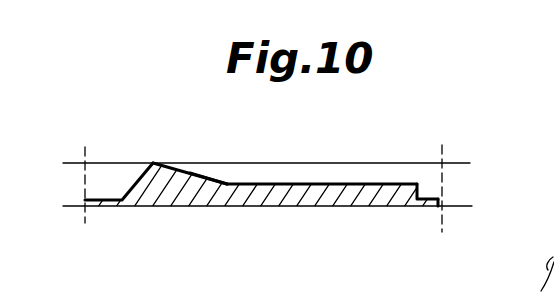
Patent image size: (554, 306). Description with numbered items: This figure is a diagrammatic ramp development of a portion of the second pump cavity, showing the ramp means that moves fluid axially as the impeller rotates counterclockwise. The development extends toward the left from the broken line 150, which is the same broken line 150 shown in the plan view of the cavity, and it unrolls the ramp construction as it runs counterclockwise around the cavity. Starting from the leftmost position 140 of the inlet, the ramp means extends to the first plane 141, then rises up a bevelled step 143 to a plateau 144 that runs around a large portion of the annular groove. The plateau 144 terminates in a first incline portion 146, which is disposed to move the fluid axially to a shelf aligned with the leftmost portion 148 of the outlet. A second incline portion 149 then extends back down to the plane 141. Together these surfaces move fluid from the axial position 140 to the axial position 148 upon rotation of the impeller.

The leftmost position of the inlet 140 is at (243, 208).
The first plane 141 is at (438, 197).
The bevelled step 143 is at (420, 188).
The plateau 144 is at (293, 183).
The first incline portion 146 is at (207, 178).
The leftmost portion of the outlet 148 is at (190, 162).
The second incline portion 149 is at (131, 186).
The broken line 150 is at (82, 152).